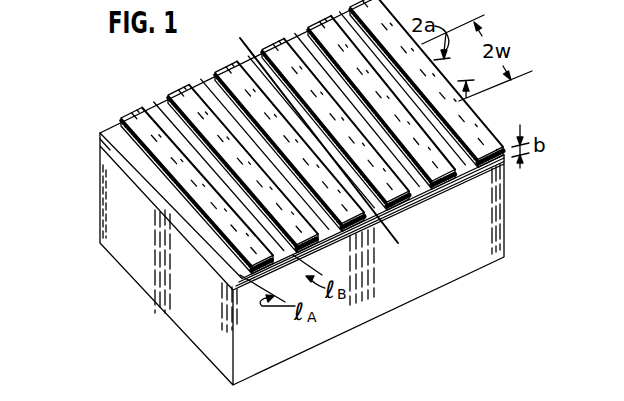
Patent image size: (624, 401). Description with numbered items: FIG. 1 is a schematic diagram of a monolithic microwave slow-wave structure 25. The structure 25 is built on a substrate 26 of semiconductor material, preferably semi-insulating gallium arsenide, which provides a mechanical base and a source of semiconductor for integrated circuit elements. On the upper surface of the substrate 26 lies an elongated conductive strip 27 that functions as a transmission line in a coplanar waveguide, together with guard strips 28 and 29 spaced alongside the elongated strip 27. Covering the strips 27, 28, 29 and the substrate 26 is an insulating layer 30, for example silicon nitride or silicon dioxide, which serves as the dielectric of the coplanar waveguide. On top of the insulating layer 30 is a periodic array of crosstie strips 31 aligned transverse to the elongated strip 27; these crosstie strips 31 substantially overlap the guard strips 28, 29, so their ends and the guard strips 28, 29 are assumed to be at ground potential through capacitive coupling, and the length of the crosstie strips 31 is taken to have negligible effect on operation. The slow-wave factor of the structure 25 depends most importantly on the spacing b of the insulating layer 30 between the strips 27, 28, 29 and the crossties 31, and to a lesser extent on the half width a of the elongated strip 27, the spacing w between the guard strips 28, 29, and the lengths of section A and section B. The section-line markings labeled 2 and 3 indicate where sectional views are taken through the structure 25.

The section line 2 is at (485, 198).
The section line 3 is at (413, 235).
The monolithic microwave slow-wave structure 25 is at (520, 213).
The substrate 26 is at (505, 244).
The elongated conductive strip 27 is at (161, 219).
The guard strip 28 is at (117, 167).
The guard strip 29 is at (217, 272).
The insulating layer 30 is at (110, 131).
The crosstie strips 31 is at (230, 63).